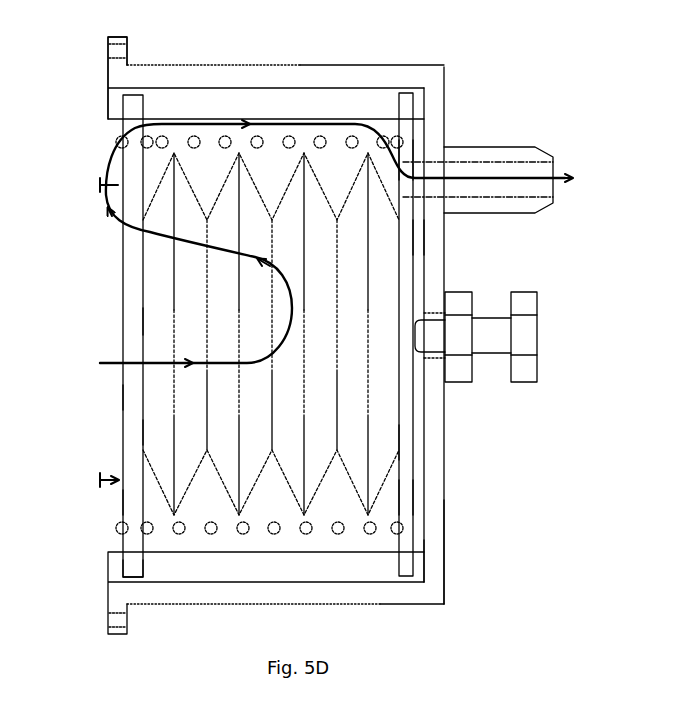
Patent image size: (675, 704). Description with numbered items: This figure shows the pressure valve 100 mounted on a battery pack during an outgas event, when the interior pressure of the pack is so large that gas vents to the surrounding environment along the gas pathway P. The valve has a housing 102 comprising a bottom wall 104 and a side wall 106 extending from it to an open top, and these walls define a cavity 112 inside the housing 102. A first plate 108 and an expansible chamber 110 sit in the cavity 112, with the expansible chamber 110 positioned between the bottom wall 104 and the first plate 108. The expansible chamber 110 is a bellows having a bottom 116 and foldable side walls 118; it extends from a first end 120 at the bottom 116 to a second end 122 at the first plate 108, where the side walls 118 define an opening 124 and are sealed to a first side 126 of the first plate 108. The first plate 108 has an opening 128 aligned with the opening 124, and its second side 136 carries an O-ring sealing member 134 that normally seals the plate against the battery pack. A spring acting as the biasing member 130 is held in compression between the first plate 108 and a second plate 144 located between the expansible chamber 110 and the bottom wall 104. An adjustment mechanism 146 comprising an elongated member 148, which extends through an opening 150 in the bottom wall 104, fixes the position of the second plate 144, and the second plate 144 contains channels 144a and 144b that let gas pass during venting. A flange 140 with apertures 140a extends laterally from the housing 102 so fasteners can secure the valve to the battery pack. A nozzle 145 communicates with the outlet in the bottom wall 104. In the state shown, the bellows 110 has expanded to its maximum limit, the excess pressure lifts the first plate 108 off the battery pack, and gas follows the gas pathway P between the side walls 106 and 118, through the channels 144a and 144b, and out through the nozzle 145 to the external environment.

The pressure valve 100 is at (435, 26).
The housing 102 is at (215, 44).
The bottom wall 104 is at (446, 568).
The side wall 106 is at (404, 604).
The first plate 108 is at (122, 503).
The expansible chamber 110 is at (150, 287).
The cavity 112 is at (192, 544).
The bottom 116 is at (400, 440).
The foldable side walls 118 is at (246, 163).
The first end 120 is at (402, 238).
The second end 122 is at (142, 432).
The opening 124 is at (142, 320).
The first side 126 is at (144, 564).
The opening 128 is at (122, 395).
The biasing member 130 is at (226, 140).
The sealing member 134 is at (110, 166).
The second side 136 is at (121, 106).
The flange 140 is at (114, 38).
The apertures 140a is at (120, 53).
The second plate 144 is at (407, 100).
The channel 144a is at (408, 497).
The channel 144b is at (404, 170).
The nozzle 145 is at (536, 146).
The adjustment mechanism 146 is at (568, 340).
The elongated member 148 is at (492, 346).
The opening 150 is at (438, 355).
The gas pathway P is at (325, 248).